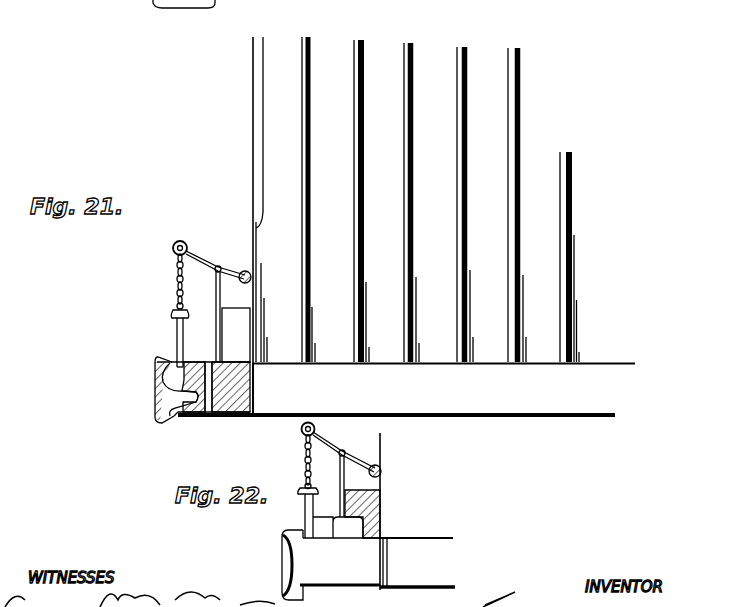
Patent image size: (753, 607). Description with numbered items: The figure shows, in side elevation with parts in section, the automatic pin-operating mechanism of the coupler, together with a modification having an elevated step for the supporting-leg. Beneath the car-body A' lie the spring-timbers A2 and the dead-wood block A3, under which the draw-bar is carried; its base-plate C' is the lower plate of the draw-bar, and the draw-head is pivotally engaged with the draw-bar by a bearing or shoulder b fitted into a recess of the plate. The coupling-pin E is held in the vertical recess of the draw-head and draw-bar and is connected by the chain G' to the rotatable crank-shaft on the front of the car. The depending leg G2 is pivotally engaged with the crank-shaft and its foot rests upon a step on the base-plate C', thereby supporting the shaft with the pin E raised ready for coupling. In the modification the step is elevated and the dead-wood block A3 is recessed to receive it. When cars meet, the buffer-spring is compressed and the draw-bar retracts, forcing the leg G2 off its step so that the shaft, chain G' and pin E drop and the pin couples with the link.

In FIG. 21, the car-body A' is at (416, 227).
In FIG. 22, the car-body A' is at (400, 511).
In FIG. 21, the spring-timbers A2 is at (406, 390).
In FIG. 21, the dead-wood block A3 is at (236, 335).
In FIG. 21, the base-plate C' is at (202, 394).
In FIG. 22, the base-plate C' is at (334, 565).
In FIG. 21, the coupling-pin E is at (184, 310).
In FIG. 22, the coupling-pin E is at (311, 486).
In FIG. 21, the chain G' is at (212, 262).
In FIG. 22, the chain G' is at (342, 470).
In FIG. 21, the depending leg G2 is at (210, 317).
In FIG. 22, the bearing or shoulder b is at (338, 527).